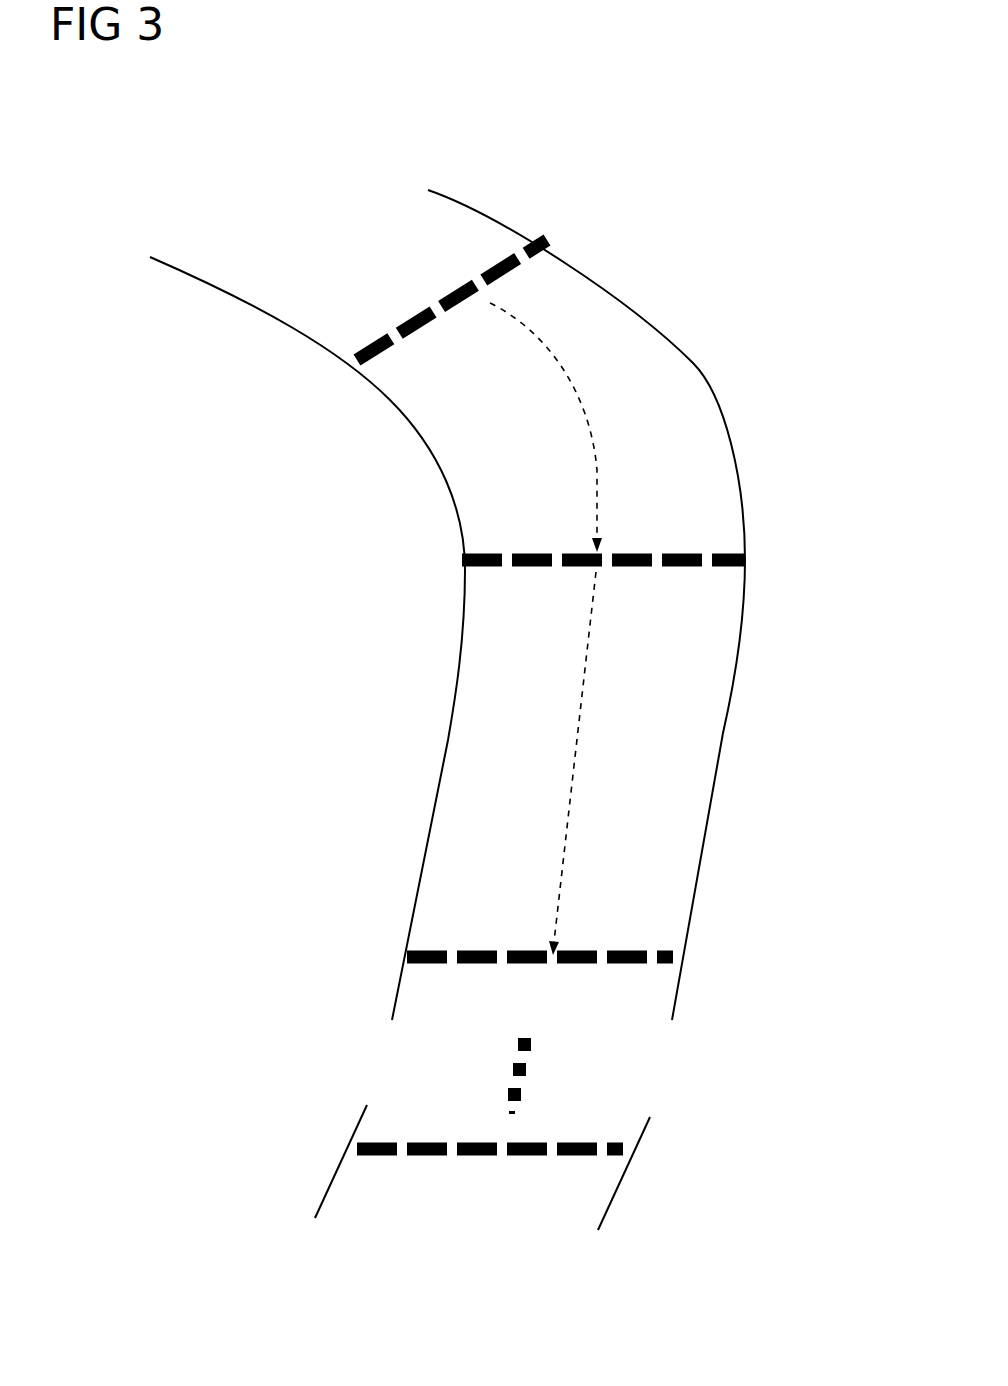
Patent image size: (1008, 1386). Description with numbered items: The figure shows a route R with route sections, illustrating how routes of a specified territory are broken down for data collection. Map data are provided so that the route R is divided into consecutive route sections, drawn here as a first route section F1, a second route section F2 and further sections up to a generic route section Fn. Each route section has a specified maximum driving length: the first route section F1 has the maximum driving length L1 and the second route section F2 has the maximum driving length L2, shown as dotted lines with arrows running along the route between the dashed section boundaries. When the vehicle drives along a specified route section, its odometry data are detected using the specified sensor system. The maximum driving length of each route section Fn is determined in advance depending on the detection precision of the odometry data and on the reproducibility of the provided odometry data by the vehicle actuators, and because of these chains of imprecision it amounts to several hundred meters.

The route R is at (740, 210).
The first route section F1 is at (693, 362).
The second route section F2 is at (723, 733).
The route section Fn is at (608, 1212).
The maximum driving length of the first route section L1 is at (603, 460).
The maximum driving length of the second route section L2 is at (577, 737).